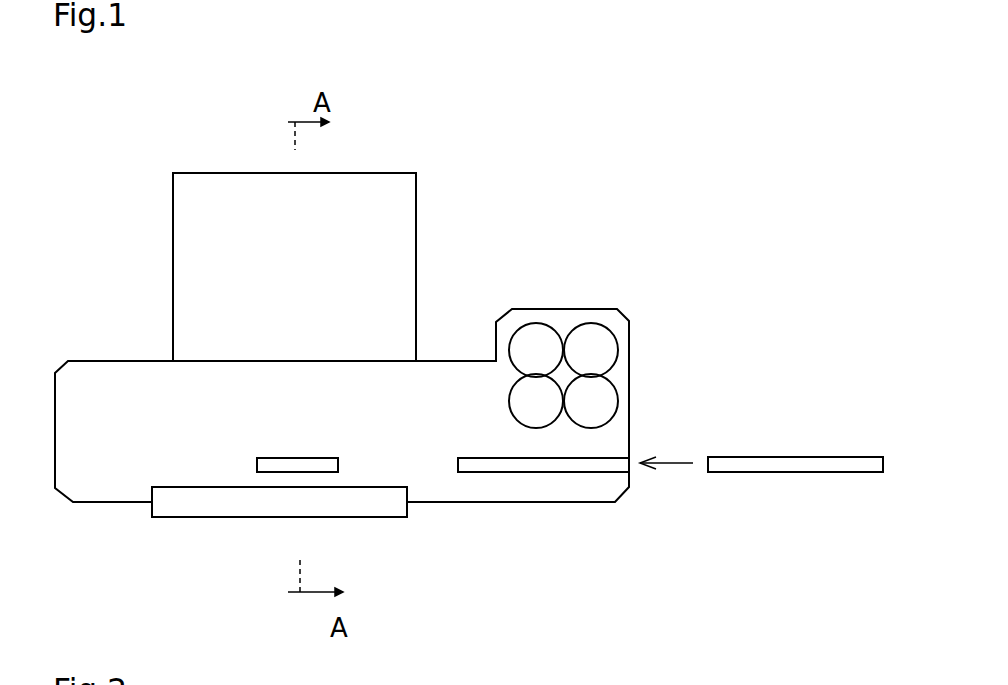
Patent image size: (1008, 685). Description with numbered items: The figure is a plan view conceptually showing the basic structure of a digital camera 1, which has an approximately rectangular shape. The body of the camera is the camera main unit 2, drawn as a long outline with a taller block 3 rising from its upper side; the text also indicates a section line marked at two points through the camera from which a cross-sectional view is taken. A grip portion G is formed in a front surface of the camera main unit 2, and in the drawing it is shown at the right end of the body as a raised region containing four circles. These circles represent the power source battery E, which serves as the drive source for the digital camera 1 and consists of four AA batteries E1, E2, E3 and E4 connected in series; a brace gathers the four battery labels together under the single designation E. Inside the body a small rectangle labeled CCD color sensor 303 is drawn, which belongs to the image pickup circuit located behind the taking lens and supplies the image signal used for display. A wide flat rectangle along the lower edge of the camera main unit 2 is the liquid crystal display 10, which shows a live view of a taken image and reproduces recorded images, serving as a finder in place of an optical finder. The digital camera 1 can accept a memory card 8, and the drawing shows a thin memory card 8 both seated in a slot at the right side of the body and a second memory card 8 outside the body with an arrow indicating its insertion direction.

The digital camera 1 is at (250, 109).
The camera main unit 2 is at (423, 515).
The cover / upper housing 3 is at (416, 170).
The CCD color sensor 303 is at (333, 458).
The liquid crystal display (LCD) 10 is at (200, 517).
The memory card 8 is at (565, 472).
The grip portion G is at (556, 299).
The power source battery E is at (632, 367).
The AA battery E1 is at (555, 331).
The AA battery E2 is at (616, 355).
The AA battery E3 is at (613, 398).
The AA battery E4 is at (623, 405).